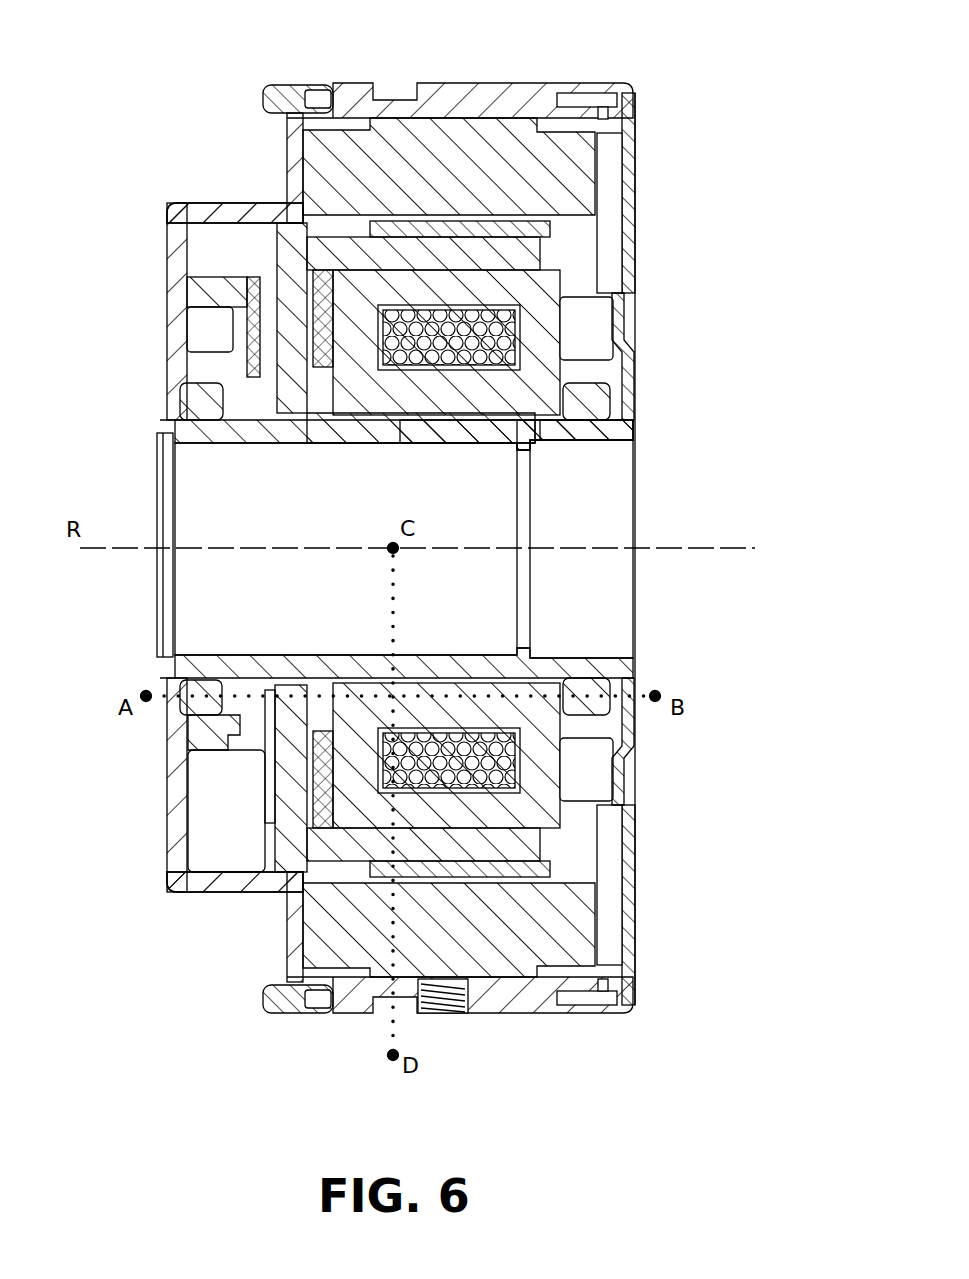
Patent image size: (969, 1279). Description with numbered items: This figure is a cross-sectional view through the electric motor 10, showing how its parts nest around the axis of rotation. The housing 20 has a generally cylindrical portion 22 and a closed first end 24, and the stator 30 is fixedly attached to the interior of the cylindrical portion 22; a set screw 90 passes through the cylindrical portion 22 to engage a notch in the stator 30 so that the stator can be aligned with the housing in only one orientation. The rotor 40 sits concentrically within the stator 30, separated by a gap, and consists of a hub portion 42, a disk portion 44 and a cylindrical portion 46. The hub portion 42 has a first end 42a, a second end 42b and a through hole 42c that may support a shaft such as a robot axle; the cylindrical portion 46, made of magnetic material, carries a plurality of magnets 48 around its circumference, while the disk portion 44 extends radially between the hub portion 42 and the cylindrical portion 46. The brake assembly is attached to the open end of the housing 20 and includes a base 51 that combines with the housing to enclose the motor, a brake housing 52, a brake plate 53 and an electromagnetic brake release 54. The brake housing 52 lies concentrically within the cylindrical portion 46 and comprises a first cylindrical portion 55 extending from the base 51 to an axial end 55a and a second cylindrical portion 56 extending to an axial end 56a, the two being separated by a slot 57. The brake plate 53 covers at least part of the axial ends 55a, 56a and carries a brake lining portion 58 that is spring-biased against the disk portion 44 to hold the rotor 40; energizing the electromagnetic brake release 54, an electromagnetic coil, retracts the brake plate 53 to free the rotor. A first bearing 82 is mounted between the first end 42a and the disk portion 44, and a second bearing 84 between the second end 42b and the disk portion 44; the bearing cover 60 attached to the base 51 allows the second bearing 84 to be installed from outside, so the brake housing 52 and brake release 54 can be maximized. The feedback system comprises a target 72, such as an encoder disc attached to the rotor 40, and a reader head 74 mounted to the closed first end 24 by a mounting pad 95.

The electric motor 10 is at (146, 78).
The housing 20 is at (160, 219).
The cylindrical portion 22 is at (522, 1014).
The closed first end 24 is at (170, 882).
The stator 30 is at (452, 130).
The rotor 40 is at (160, 663).
The hub portion 42 is at (212, 444).
The first end 42a is at (155, 440).
The second end 42b is at (640, 424).
The through hole 42c is at (228, 562).
The disk portion 44 is at (285, 245).
The cylindrical portion 46 is at (535, 252).
The magnets 48 is at (515, 222).
The base 51 is at (605, 198).
The brake housing 52 is at (496, 426).
The brake plate 53 is at (345, 796).
The electromagnetic brake release 54 is at (618, 722).
The first cylindrical portion 55 is at (545, 292).
The axial end 55a is at (318, 300).
The second cylindrical portion 56 is at (545, 421).
The axial end 56a is at (385, 412).
The slot 57 is at (495, 322).
The brake lining portion 58 is at (330, 761).
The bearing cover 60 is at (627, 362).
The target 72 is at (266, 800).
The reader head 74 is at (250, 330).
The first bearing 82 is at (188, 716).
The second bearing 84 is at (600, 690).
The set screw 90 is at (446, 1014).
The mounting pad 95 is at (235, 297).